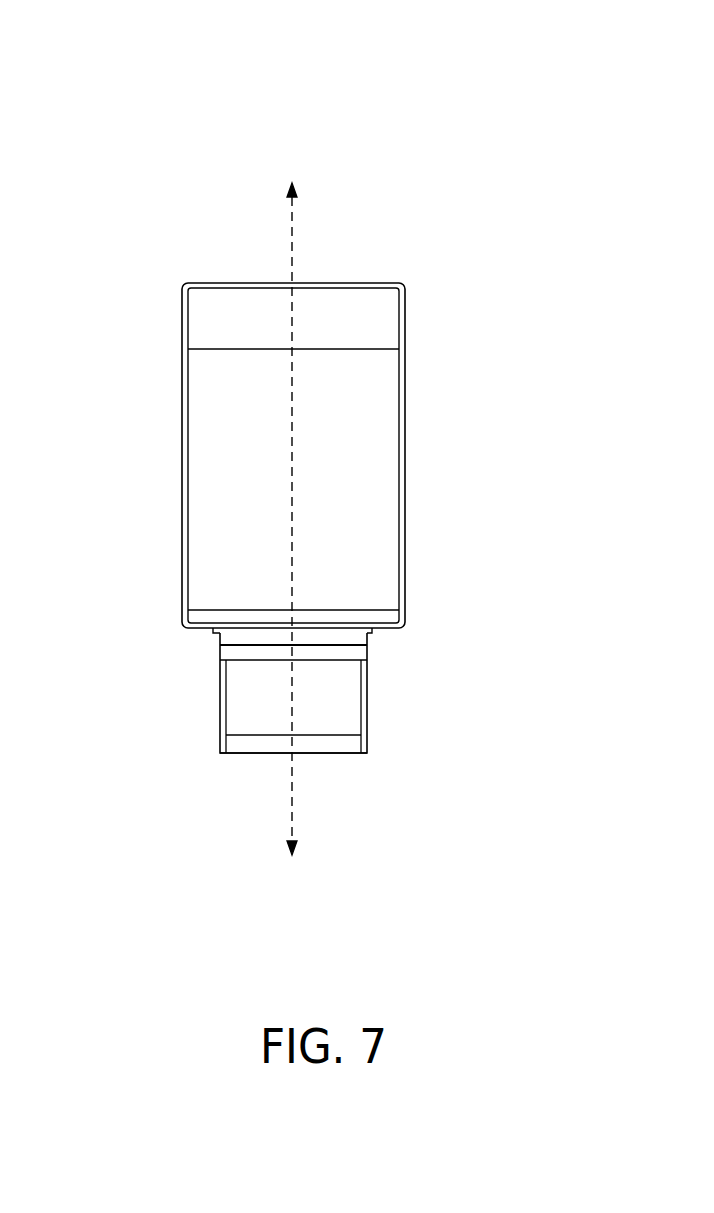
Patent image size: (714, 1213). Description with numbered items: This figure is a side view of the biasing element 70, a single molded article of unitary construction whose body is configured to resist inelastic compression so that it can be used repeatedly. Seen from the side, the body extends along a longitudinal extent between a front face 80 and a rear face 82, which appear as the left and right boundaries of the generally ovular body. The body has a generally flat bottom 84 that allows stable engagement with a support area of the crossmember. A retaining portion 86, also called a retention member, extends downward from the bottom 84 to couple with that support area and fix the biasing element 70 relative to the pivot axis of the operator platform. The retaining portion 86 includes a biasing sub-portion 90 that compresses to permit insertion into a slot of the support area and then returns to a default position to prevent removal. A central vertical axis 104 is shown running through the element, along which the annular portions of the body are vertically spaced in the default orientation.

The biasing element 70 is at (133, 287).
The front face 80 is at (174, 567).
The rear face 82 is at (405, 425).
The bottom 84 is at (186, 627).
The retaining portion 86 is at (266, 755).
The biasing sub-portion 90 is at (322, 703).
The central vertical axis 104 is at (292, 243).